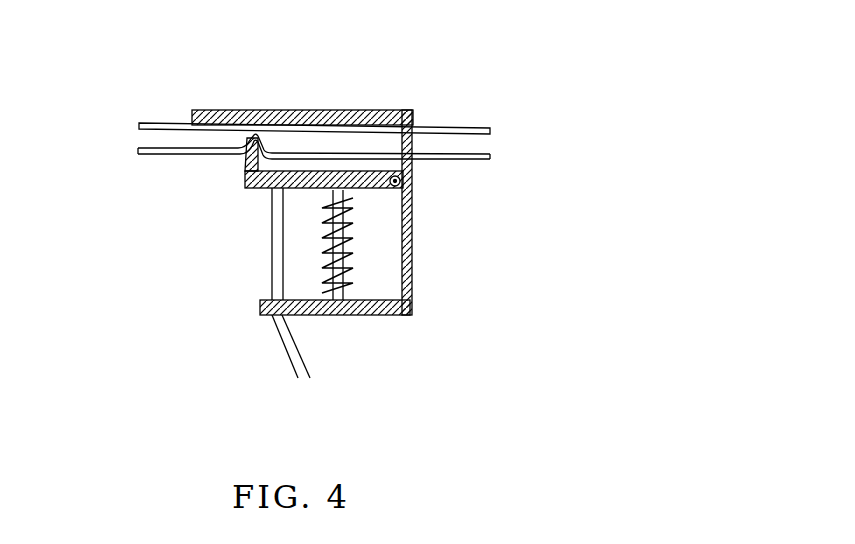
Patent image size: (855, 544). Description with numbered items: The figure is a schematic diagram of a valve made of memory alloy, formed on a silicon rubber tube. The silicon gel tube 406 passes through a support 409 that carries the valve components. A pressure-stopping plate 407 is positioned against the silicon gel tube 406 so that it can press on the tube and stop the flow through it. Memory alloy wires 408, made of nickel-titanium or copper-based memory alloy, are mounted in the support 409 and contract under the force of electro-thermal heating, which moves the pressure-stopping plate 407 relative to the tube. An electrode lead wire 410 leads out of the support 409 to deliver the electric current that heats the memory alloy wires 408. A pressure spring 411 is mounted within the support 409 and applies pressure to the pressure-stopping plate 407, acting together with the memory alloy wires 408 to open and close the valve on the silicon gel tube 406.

The silicon gel tube 406 is at (452, 128).
The pressure-stopping plate 407 is at (237, 172).
The memory alloy wires 408 is at (273, 266).
The support 409 is at (413, 222).
The electrode lead wire 410 is at (282, 345).
The pressure spring 411 is at (343, 262).